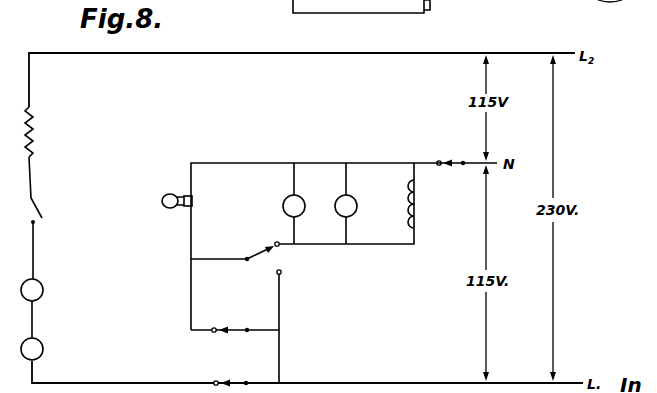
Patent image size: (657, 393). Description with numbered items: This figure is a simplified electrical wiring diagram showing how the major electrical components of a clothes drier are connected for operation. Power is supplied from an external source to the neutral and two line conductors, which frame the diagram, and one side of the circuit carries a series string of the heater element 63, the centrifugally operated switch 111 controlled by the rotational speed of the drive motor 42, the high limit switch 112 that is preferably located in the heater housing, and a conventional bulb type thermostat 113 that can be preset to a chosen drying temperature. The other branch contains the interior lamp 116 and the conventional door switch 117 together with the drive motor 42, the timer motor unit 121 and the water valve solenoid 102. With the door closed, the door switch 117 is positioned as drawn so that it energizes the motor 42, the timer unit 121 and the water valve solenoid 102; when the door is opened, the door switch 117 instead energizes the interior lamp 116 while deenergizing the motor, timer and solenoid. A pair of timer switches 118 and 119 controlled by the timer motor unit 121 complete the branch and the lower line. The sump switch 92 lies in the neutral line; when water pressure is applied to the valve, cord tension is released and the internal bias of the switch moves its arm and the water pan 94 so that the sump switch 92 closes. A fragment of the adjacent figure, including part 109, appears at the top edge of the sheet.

The heater element 63 is at (59, 132).
The centrifugally operated switch 111 is at (78, 218).
The high limit switch 112 is at (61, 301).
The bulb type thermostat 113 is at (80, 342).
The interior lamp 116 is at (174, 191).
The drive motor 42 is at (285, 203).
The timer motor unit 121 is at (340, 203).
The water valve solenoid 102 is at (432, 209).
The sump switch 92 is at (441, 153).
The door switch 117 is at (247, 280).
The timer switch 118 is at (235, 324).
The timer switch 119 is at (235, 376).
The housing 109 is at (431, 5).
The water pan 94 is at (621, 5).